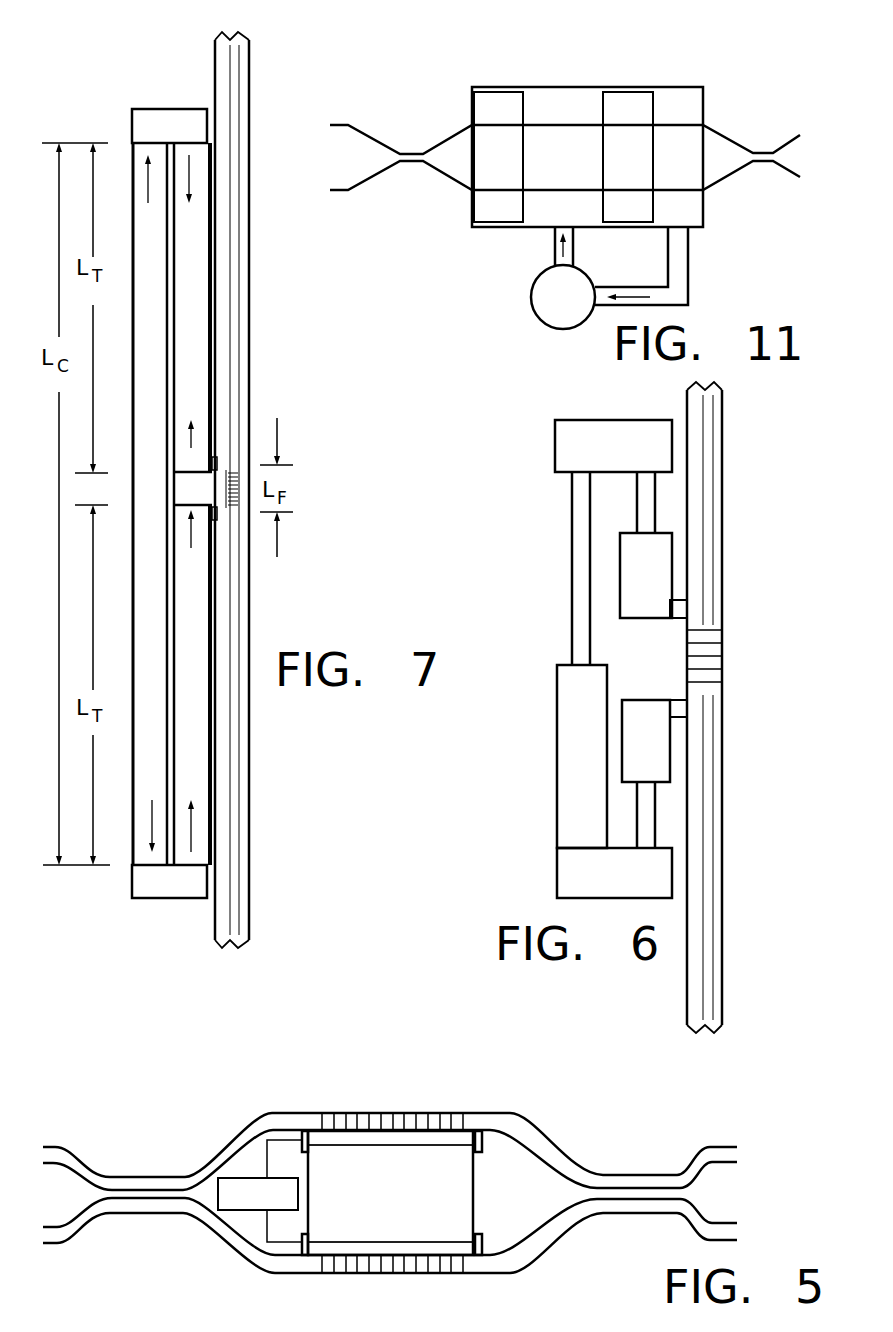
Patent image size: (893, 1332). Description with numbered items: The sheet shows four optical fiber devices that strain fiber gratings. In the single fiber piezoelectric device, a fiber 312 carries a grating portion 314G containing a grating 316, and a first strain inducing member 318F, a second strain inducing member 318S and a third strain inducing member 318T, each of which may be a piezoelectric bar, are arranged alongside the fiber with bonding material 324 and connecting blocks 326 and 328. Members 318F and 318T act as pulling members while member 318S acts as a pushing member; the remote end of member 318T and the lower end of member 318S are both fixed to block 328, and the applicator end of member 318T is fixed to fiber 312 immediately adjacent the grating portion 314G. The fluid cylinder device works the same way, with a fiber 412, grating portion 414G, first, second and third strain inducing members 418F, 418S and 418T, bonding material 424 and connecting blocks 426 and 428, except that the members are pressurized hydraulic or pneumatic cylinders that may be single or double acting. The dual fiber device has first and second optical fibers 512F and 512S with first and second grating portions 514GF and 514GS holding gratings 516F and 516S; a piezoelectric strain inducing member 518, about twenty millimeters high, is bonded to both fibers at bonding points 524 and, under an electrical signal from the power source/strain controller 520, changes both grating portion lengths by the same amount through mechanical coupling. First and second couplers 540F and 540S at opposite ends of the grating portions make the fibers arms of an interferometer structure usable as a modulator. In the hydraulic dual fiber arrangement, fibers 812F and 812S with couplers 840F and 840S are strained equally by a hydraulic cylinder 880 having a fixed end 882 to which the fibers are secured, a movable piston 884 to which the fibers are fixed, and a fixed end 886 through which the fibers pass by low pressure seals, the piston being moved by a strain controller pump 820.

In FIG. 7, the fiber 312 is at (230, 277).
In FIG. 7, the grating portion 314G is at (235, 470).
In FIG. 7, the grating 316 is at (237, 503).
In FIG. 7, the first strain inducing member 318F is at (193, 217).
In FIG. 7, the second strain inducing member 318S is at (133, 160).
In FIG. 7, the third strain inducing member 318T is at (197, 530).
In FIG. 7, the bonding material 324 is at (217, 460).
In FIG. 7, the connecting block 326 is at (163, 108).
In FIG. 7, the connecting block 328 is at (157, 885).
In FIG. 6, the fiber 412 is at (702, 488).
In FIG. 6, the grating portion 414G is at (708, 637).
In FIG. 6, the first strain inducing member 418F is at (648, 563).
In FIG. 6, the second strain inducing member 418S is at (583, 752).
In FIG. 6, the third strain inducing member 418T is at (650, 752).
In FIG. 6, the bonding material 424 is at (680, 607).
In FIG. 6, the connecting block 426 is at (657, 450).
In FIG. 6, the connecting block 428 is at (645, 870).
In FIG. 11, the first fiber 812F is at (443, 123).
In FIG. 11, the second fiber 812S is at (453, 183).
In FIG. 11, the strain controller pump 820 is at (557, 323).
In FIG. 11, the first coupler 840F is at (410, 155).
In FIG. 11, the second coupler 840S is at (762, 153).
In FIG. 11, the hydraulic cylinder 880 is at (548, 87).
In FIG. 11, the fixed end 882 is at (498, 213).
In FIG. 11, the movable piston 884 is at (620, 107).
In FIG. 11, the fixed end 886 is at (707, 215).
In FIG. 5, the first optical fiber 512F is at (528, 1113).
In FIG. 5, the second optical fiber 512S is at (513, 1273).
In FIG. 5, the first grating portion 514GF is at (370, 1113).
In FIG. 5, the second grating portion 514GS is at (373, 1273).
In FIG. 5, the grating 516F is at (357, 1110).
In FIG. 5, the grating 516S is at (347, 1275).
In FIG. 5, the strain inducing member 518 is at (442, 1190).
In FIG. 5, the power source/strain controller 520 is at (217, 1197).
In FIG. 5, the bonding points 524 is at (297, 1133).
In FIG. 5, the first coupler 540F is at (140, 1177).
In FIG. 5, the second coupler 540S is at (635, 1180).